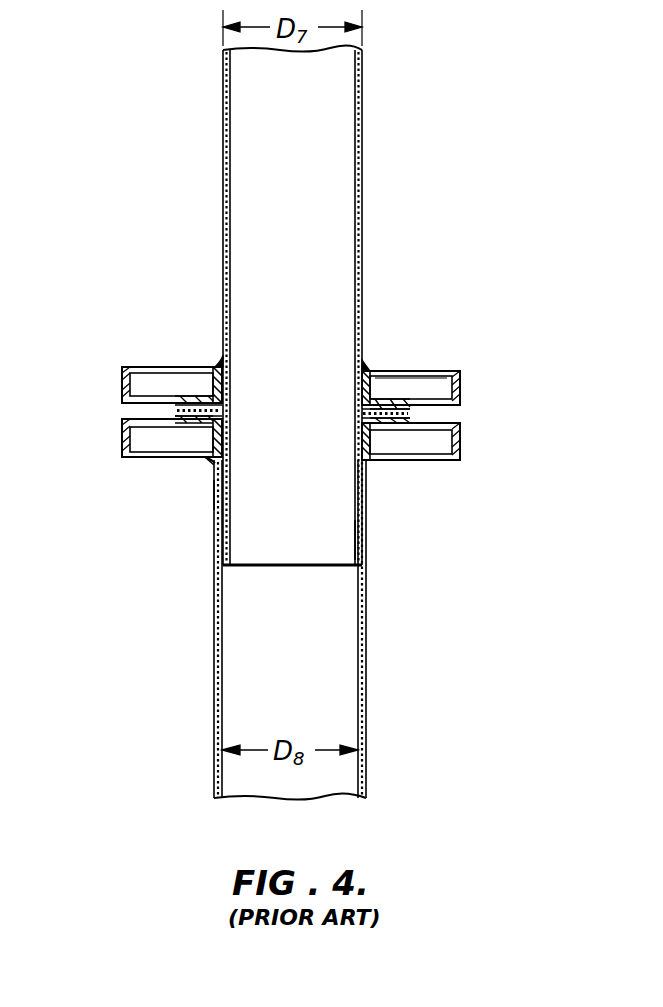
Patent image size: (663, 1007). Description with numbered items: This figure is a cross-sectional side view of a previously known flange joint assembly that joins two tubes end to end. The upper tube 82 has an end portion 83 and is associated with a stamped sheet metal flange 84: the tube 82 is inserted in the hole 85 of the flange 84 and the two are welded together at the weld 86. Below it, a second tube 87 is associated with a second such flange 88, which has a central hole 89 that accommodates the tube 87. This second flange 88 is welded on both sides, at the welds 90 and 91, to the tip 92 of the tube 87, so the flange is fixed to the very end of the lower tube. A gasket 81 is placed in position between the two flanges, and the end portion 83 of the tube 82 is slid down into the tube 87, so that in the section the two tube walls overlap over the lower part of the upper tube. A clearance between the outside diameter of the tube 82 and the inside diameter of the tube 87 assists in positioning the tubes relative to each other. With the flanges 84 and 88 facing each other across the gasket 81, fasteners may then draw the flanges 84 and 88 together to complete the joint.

The gasket 81 is at (392, 400).
The tube 82 is at (365, 122).
The end portion 83 is at (360, 517).
The stamped sheet metal flange 84 is at (462, 396).
The hole 85 is at (231, 378).
The weld 86 is at (368, 368).
The second tube 87 is at (366, 683).
The second flange 88 is at (124, 436).
The central hole 89 is at (214, 495).
The weld 90 is at (215, 462).
The weld 91 is at (230, 420).
The tip 92 is at (373, 440).